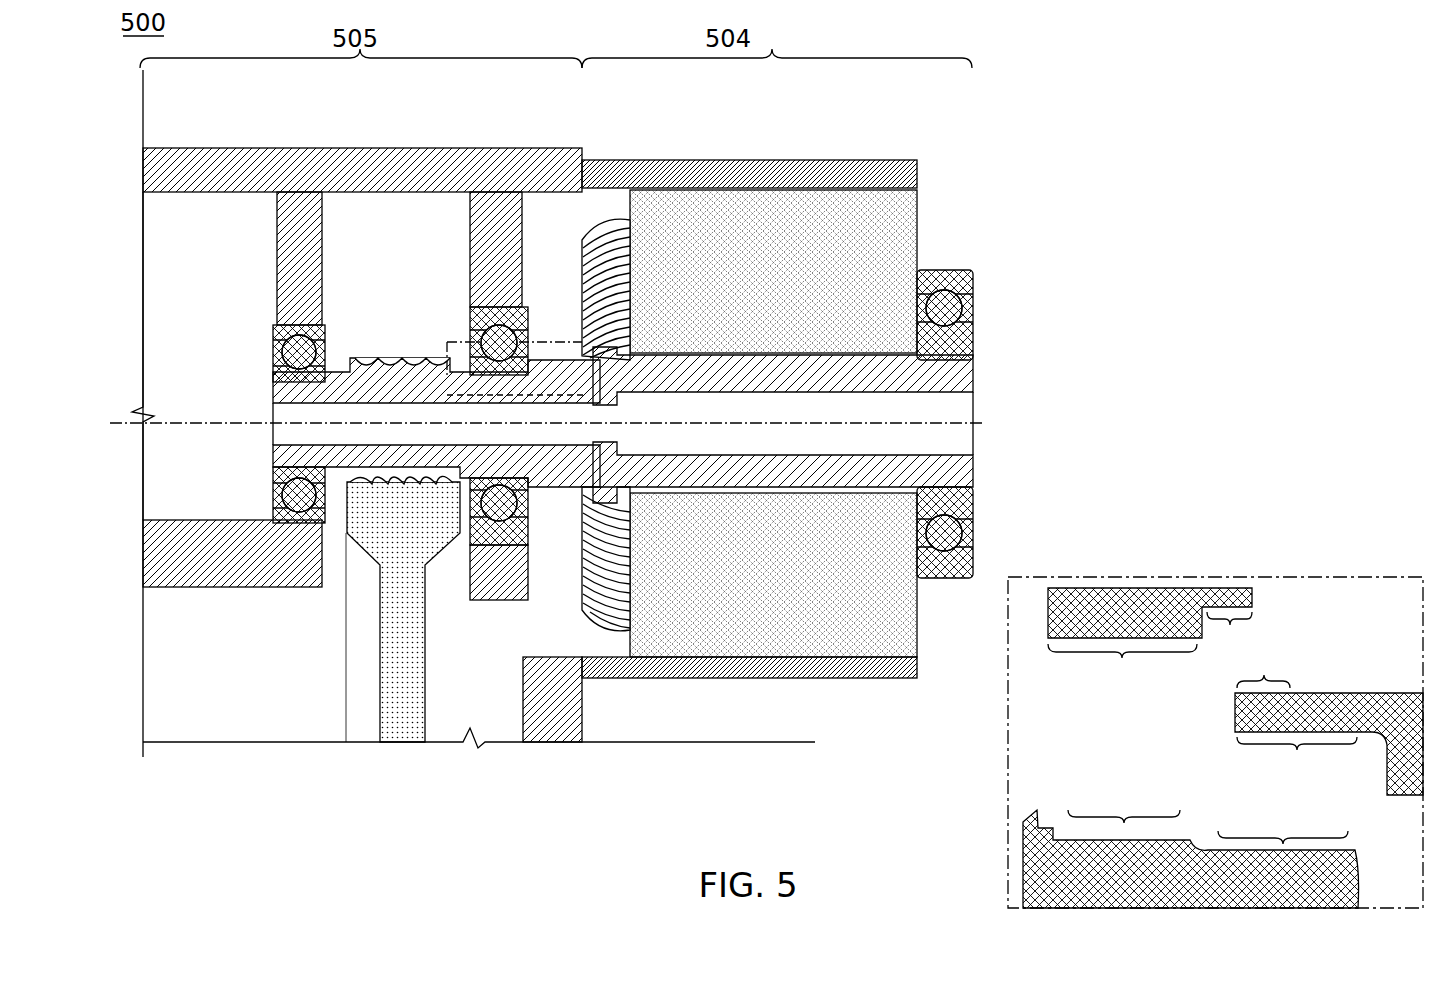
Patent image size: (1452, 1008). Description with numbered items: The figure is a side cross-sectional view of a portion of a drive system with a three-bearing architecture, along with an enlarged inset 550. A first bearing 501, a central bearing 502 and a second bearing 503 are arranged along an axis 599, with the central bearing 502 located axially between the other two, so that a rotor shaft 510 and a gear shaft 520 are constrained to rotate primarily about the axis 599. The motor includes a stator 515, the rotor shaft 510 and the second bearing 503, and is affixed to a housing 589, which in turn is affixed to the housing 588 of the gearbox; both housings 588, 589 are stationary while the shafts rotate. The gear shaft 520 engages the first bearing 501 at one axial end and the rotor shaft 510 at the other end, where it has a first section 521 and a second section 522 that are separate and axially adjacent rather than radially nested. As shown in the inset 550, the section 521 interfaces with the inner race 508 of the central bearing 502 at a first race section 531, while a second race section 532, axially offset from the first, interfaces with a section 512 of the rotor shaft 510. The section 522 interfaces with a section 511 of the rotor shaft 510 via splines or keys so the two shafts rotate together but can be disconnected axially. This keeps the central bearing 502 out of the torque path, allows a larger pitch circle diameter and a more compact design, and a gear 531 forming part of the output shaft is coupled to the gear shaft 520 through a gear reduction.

The first bearing 501 is at (275, 325).
The central bearing 502 is at (530, 307).
The second bearing 503 is at (945, 270).
The inner race 508 is at (586, 228).
The rotor shaft 510 is at (762, 387).
The section of rotor shaft 511 is at (1297, 757).
The section of rotor shaft 512 is at (1272, 667).
The stator 515 is at (794, 257).
The gear shaft 520 is at (427, 399).
The section 521 is at (1124, 800).
The section 522 is at (1283, 819).
The gear 531 is at (417, 542).
The second race section 532 is at (1234, 632).
The enlarged inset 550 is at (448, 342).
The housing 588 is at (230, 148).
The housing 589 is at (848, 160).
The axis 599 is at (210, 420).